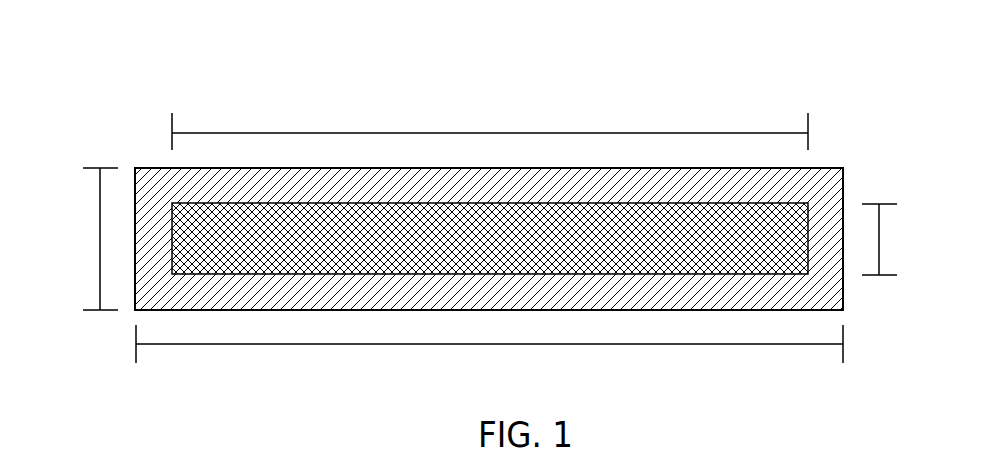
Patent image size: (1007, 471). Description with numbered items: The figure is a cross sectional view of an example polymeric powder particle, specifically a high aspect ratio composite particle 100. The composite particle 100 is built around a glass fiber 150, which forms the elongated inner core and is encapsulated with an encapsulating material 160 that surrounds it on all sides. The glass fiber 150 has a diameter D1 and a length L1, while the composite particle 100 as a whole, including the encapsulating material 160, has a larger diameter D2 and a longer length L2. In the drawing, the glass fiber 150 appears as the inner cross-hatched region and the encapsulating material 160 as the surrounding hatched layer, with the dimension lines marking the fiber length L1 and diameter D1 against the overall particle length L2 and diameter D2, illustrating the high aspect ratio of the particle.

The high aspect ratio composite particle 100 is at (231, 63).
The glass fiber 150 is at (198, 227).
The encapsulating material 160 is at (808, 180).
The length of the glass fiber L1 is at (697, 133).
The length of the composite particle L2 is at (305, 345).
The diameter of the glass fiber D1 is at (879, 241).
The diameter of the composite particle D2 is at (100, 241).